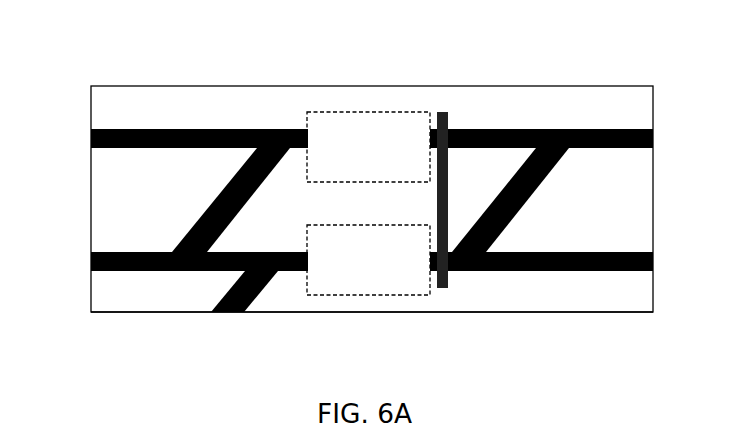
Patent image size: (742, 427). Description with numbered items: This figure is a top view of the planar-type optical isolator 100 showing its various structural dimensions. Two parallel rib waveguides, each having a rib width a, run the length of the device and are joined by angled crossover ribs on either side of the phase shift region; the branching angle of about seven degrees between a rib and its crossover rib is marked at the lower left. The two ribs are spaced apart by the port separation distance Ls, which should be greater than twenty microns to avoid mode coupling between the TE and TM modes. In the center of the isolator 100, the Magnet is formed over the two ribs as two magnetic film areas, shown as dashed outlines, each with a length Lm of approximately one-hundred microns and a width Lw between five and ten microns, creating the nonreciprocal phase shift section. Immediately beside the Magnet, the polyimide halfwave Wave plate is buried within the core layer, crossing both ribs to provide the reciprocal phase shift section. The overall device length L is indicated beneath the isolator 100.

The isolator 100 is at (401, 188).
The rib width a is at (672, 106).
The port separation distance Ls is at (110, 148).
The polyimide halfwave plate Wave plate is at (443, 232).
The magnet Magnet is at (356, 203).
The magnet length Lm is at (430, 129).
The magnet width Lw is at (368, 260).
The device length L is at (653, 330).